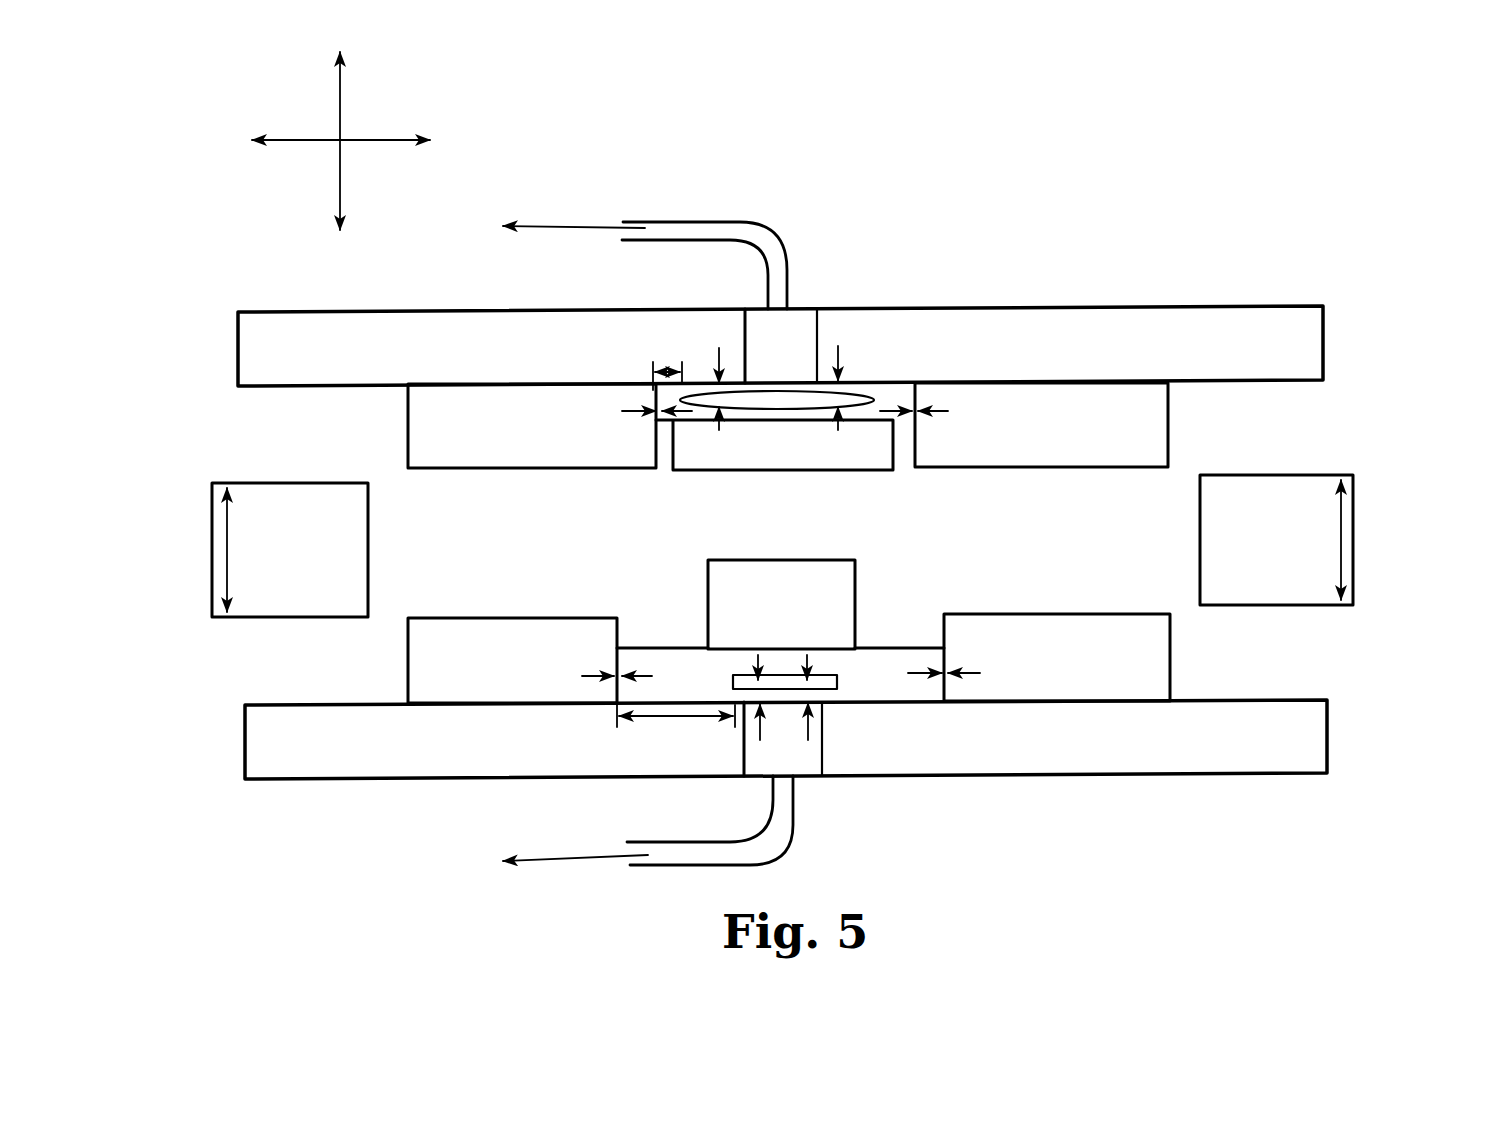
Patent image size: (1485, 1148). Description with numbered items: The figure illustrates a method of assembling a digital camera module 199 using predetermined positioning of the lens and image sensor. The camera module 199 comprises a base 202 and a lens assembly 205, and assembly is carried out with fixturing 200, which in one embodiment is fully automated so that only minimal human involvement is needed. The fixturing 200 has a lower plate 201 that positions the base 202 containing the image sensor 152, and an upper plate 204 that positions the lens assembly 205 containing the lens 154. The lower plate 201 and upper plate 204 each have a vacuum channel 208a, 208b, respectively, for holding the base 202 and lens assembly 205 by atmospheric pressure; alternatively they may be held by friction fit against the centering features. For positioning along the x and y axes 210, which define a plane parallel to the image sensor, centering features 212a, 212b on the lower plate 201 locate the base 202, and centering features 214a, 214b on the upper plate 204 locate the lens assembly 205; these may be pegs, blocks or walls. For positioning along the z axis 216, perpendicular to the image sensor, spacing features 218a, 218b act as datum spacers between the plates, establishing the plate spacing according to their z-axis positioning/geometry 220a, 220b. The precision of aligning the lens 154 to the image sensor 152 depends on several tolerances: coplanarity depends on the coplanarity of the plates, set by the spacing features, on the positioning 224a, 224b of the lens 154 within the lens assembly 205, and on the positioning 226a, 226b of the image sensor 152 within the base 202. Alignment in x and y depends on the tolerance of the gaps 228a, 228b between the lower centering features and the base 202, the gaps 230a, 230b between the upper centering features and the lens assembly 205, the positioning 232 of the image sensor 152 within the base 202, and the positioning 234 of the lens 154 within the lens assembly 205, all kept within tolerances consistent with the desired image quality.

The image sensor 152 is at (840, 682).
The lens 154 is at (873, 394).
The digital camera module 199 is at (704, 604).
The fixturing 200 is at (1250, 262).
The lower plate 201 is at (1218, 777).
The base 202 is at (890, 648).
The upper plate 204 is at (1093, 306).
The lens assembly 205 is at (875, 472).
The vacuum channel 208a is at (806, 778).
The vacuum channel 208b is at (800, 308).
The x and y axes 210 is at (384, 138).
The centering feature 212a is at (496, 619).
The centering feature 212b is at (1035, 614).
The centering feature 214a is at (504, 470).
The centering feature 214b is at (1108, 468).
The z axis 216 is at (338, 110).
The spacing feature 218a is at (248, 483).
The spacing feature 218b is at (1290, 476).
The z-axis positioning/geometry 220a is at (227, 523).
The z-axis positioning/geometry 220b is at (1341, 534).
The positioning of lens 224a is at (716, 360).
The positioning of lens 224b is at (858, 342).
The positioning of image sensor 226a is at (757, 728).
The positioning of image sensor 226b is at (814, 728).
The gap 228a is at (608, 672).
The gap 228b is at (950, 670).
The gap 230a is at (652, 414).
The gap 230b is at (925, 414).
The positioning of image sensor in x and y axes 232 is at (617, 716).
The positioning of lens in x and y axes 234 is at (653, 372).